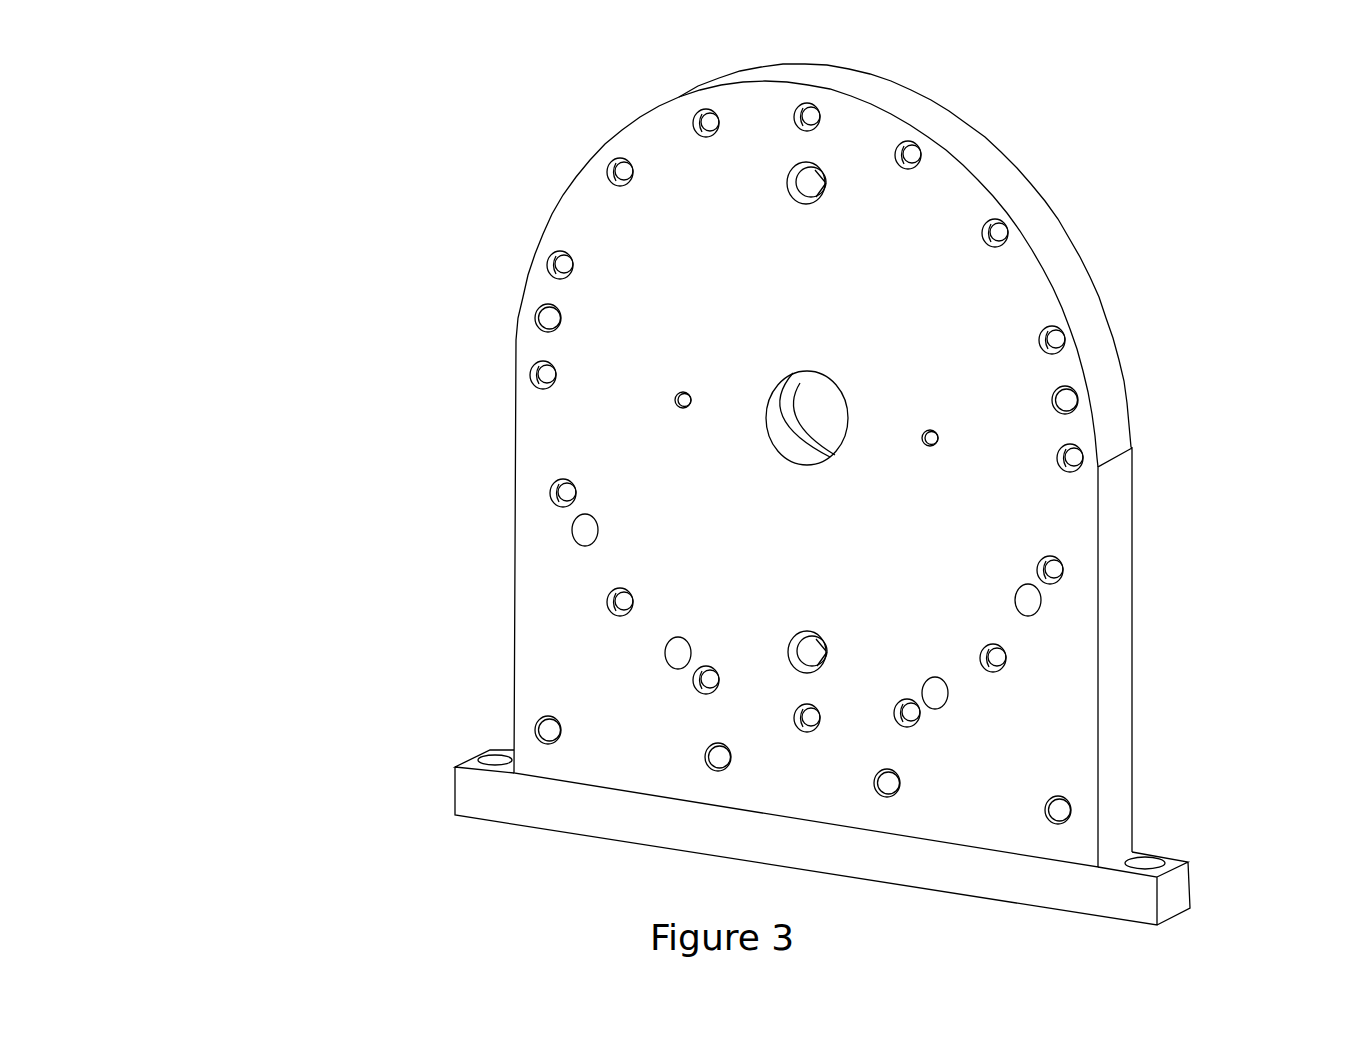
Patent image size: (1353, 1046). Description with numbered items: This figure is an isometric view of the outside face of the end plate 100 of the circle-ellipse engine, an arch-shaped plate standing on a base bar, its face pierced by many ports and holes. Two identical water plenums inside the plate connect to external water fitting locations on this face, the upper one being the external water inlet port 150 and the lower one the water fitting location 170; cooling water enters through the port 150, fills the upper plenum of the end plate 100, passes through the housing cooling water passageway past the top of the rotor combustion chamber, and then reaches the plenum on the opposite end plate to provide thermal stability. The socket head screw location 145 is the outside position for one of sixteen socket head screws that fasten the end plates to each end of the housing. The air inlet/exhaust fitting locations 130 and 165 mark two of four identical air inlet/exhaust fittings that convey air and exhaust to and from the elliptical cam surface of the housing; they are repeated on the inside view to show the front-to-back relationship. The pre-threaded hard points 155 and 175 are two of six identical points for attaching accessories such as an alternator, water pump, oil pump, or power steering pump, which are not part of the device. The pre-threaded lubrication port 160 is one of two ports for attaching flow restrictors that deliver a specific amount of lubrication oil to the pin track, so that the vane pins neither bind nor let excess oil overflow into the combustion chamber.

The end plate 100 is at (283, 45).
The air inlet/exhaust fitting location 130 is at (1045, 599).
The socket head screw location 145 is at (692, 118).
The external water inlet port 150 is at (783, 183).
The pre-threaded hard point 155 is at (534, 313).
The pre-threaded lubrication port 160 is at (674, 402).
The air inlet/exhaust fitting location 165 is at (569, 531).
The external water fitting location 170 is at (788, 648).
The pre-threaded hard point 175 is at (542, 719).